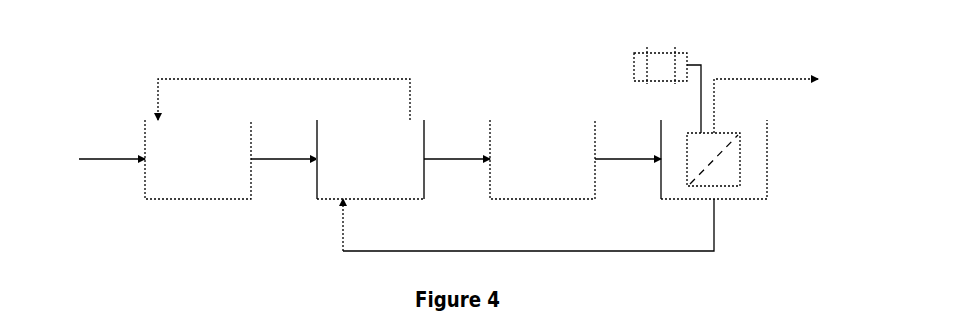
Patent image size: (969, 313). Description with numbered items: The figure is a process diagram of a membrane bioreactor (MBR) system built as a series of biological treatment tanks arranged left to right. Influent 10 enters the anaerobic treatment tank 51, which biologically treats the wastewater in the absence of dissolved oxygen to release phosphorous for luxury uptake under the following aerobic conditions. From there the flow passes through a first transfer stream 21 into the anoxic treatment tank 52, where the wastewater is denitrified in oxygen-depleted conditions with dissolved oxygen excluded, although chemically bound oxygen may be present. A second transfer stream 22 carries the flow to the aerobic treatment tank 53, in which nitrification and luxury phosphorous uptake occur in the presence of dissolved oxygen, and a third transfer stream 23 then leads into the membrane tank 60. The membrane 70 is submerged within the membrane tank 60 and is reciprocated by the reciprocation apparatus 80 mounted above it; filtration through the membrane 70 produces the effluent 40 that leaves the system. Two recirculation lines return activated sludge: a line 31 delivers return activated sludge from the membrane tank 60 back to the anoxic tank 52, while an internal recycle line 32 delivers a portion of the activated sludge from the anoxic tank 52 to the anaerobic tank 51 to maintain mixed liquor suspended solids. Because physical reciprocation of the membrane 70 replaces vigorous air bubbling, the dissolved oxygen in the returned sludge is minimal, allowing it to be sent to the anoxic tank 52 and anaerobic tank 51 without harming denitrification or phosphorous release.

The influent 10 is at (112, 150).
The first intermediate stream 21 is at (284, 150).
The second intermediate stream 22 is at (457, 150).
The third intermediate stream 23 is at (628, 150).
The line 31 is at (528, 225).
The internal recycle line 32 is at (284, 90).
The effluent 40 is at (766, 96).
The anaerobic treatment tank 51 is at (198, 159).
The anoxic treatment tank 52 is at (370, 159).
The aerobic treatment tank 53 is at (542, 159).
The membrane tank 60 is at (714, 159).
The membrane 70 is at (713, 159).
The reciprocation apparatus 80 is at (667, 90).